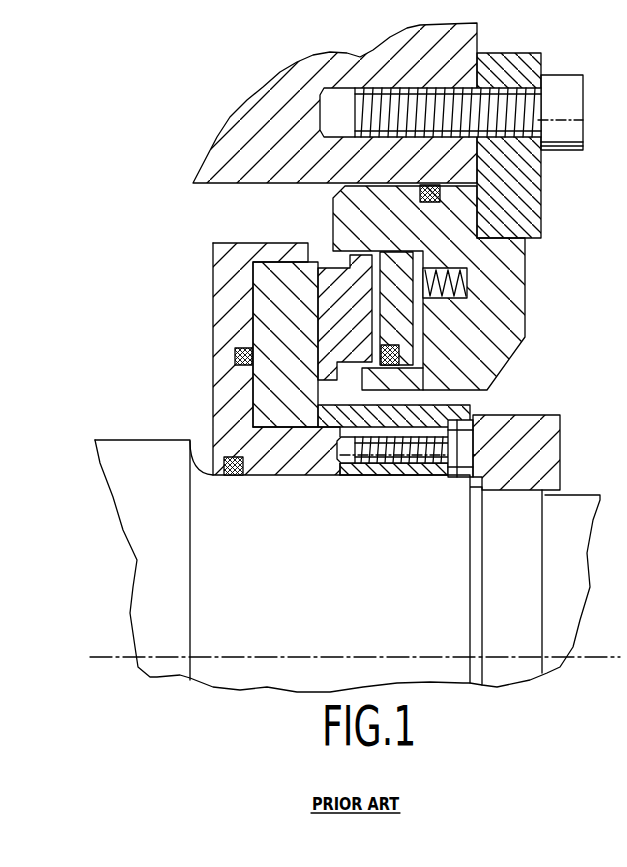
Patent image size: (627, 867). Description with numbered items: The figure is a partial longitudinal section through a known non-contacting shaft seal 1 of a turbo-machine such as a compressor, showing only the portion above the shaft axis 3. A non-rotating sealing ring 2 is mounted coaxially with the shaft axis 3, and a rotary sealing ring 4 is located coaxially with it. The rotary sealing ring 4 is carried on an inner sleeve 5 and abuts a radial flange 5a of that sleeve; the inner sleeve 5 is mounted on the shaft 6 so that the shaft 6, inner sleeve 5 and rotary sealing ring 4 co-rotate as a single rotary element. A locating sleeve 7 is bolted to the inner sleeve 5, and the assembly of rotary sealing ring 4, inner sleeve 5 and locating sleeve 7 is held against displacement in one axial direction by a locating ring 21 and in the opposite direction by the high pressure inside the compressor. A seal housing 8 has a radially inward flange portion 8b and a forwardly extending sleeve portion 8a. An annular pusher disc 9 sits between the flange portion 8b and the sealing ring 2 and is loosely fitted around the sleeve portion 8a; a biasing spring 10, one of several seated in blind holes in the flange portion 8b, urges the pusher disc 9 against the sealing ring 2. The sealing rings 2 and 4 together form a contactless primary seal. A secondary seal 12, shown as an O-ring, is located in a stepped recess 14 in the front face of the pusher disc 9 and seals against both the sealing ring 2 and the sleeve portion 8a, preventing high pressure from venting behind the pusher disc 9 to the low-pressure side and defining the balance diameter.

The shaft seal 1 is at (181, 210).
The sealing ring 2 is at (323, 280).
The shaft axis 3 is at (327, 657).
The rotary sealing ring 4 is at (263, 277).
The inner sleeve 5 is at (270, 463).
The radial flange 5a is at (219, 310).
The shaft 6 is at (205, 457).
The locating sleeve 7 is at (463, 407).
The seal housing 8 is at (520, 252).
The forwardly extending sleeve portion 8a is at (415, 380).
The radially inward flange portion 8b is at (513, 318).
The pusher disc 9 is at (373, 250).
The biasing spring 10 is at (520, 278).
The secondary seal 12 is at (413, 353).
The stepped recess 14 is at (403, 345).
The locating ring 21 is at (547, 458).